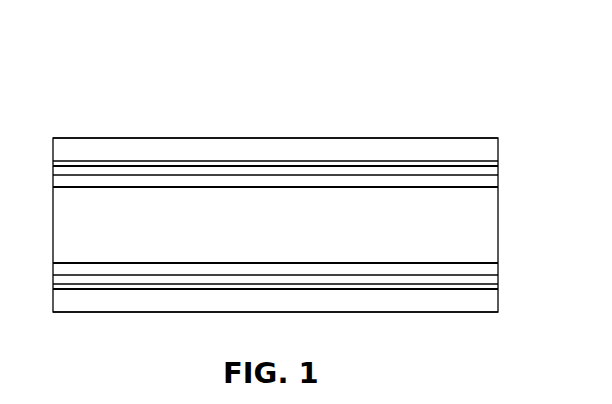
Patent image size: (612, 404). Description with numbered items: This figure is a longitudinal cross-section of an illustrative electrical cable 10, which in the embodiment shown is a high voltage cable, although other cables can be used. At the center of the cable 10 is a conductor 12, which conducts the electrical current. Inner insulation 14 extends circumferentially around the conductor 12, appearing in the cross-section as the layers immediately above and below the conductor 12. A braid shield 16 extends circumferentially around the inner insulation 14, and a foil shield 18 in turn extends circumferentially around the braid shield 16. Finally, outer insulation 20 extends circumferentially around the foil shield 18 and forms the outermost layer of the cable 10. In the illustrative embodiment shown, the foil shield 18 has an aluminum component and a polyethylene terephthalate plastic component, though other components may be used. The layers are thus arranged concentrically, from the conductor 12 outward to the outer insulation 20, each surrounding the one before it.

The electrical cable 10 is at (422, 90).
The conductor 12 is at (490, 218).
The inner insulation 14 is at (498, 180).
The braid shield 16 is at (498, 162).
The foil shield 18 is at (498, 171).
The outer insulation 20 is at (452, 138).